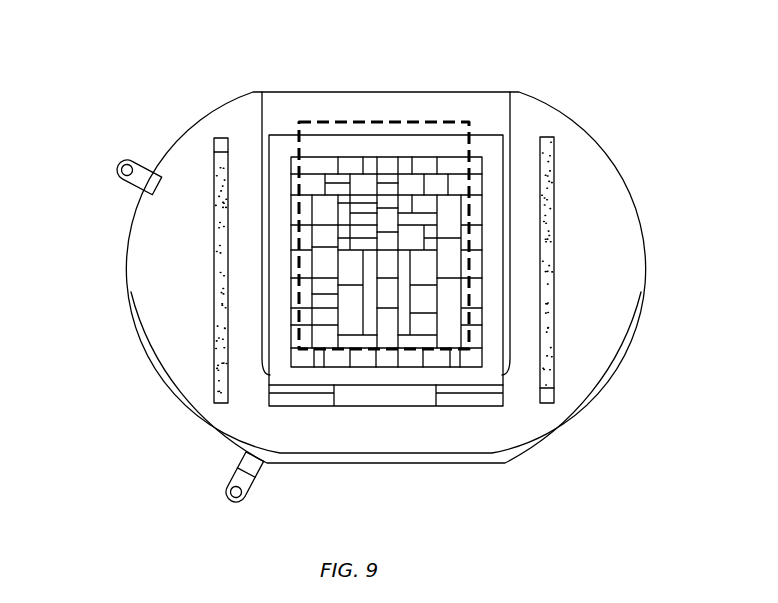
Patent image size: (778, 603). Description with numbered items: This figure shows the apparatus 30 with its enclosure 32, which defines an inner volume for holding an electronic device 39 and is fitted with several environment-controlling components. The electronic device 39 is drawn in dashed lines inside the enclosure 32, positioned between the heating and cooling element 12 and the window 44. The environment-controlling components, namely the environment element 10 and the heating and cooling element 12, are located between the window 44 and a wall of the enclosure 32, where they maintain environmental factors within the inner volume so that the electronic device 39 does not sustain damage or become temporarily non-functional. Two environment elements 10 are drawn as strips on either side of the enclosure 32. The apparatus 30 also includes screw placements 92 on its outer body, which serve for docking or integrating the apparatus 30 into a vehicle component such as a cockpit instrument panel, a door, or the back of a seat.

The environment element 10 is at (207, 203).
The heating and cooling element 12 is at (438, 203).
The apparatus 30 is at (592, 500).
The enclosure 32 is at (182, 332).
The electronic device 39 is at (332, 118).
The window 44 is at (490, 121).
The screw placements 92 is at (118, 164).